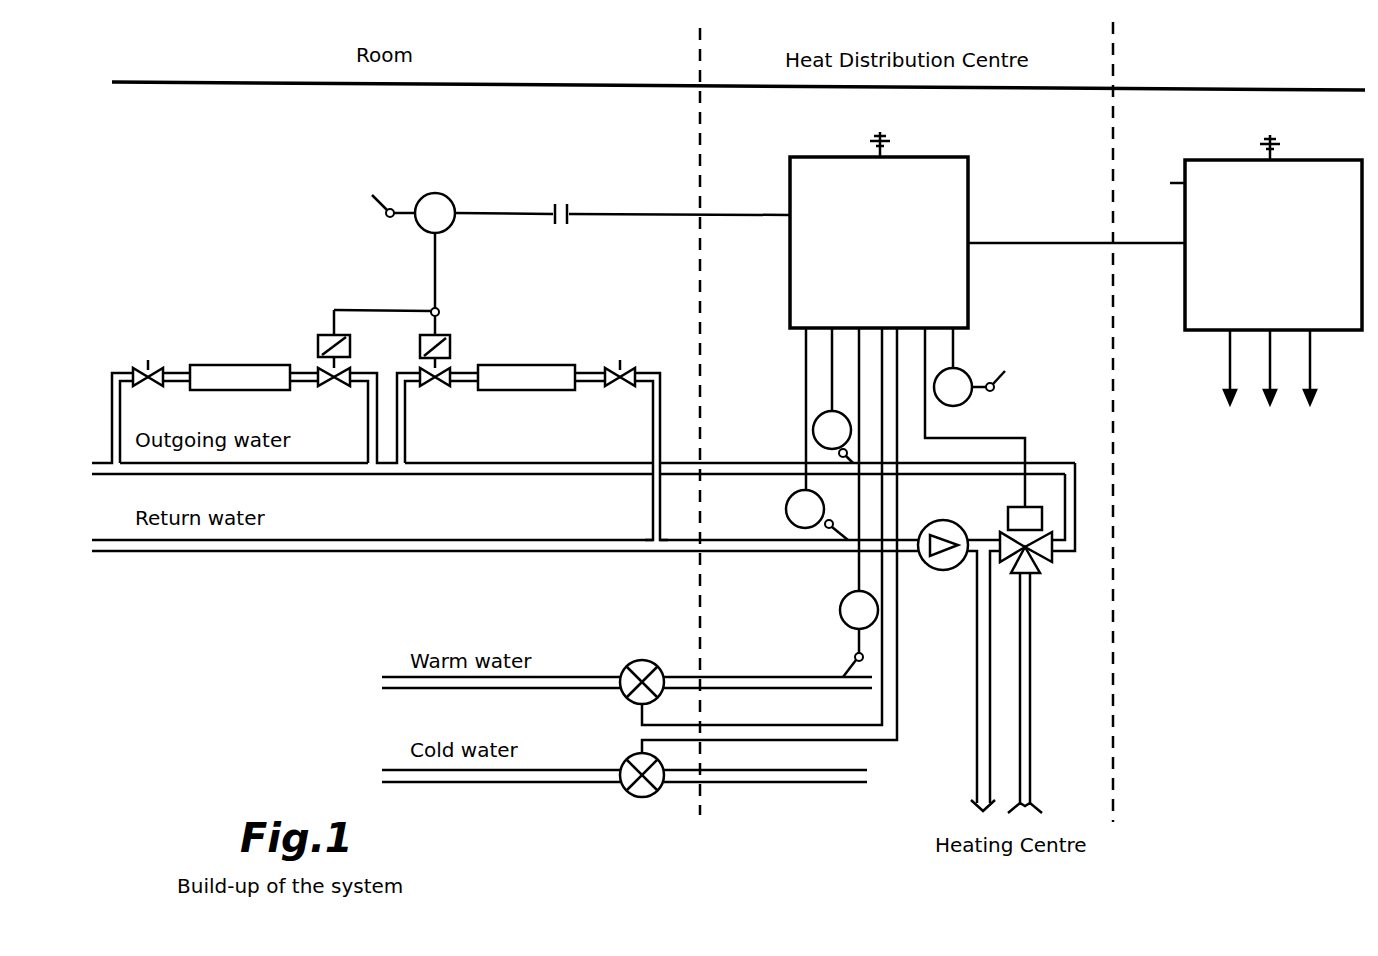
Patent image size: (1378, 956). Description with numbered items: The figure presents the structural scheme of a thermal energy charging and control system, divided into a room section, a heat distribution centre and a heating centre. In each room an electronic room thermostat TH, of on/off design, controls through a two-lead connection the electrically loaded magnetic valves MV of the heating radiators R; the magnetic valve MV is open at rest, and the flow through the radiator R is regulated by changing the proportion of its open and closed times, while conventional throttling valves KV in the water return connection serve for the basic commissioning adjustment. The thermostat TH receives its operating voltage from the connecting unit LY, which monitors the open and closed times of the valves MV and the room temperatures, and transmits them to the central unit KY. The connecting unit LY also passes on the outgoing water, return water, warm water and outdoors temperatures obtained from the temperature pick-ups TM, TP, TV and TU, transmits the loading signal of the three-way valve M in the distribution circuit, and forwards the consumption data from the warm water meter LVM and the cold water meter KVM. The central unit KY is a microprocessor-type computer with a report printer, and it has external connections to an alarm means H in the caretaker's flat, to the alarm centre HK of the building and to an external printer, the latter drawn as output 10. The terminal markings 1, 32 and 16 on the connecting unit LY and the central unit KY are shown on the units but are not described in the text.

The terminal 1 of connecting unit / central unit 1 is at (790, 183).
The terminal 32 of connecting unit 32 is at (790, 283).
The terminal 16 of central unit 16 is at (1185, 297).
The output 10 of central unit 10 is at (1231, 386).
The alarm means H is at (1269, 386).
The alarm centre HK is at (1311, 386).
The electronic room thermostat TH is at (413, 264).
The throttling valve KV is at (384, 386).
The magnetic valve MV is at (386, 361).
The heating radiator R is at (382, 378).
The connecting unit LY is at (879, 217).
The central unit KY is at (1254, 218).
The outgoing water temperature pick-up TM is at (833, 395).
The return water temperature pick-up TP is at (817, 434).
The warm water temperature pick-up TV is at (859, 502).
The outdoors temperature pick-up TU is at (969, 367).
The three-way valve M is at (988, 450).
The warm water meter LVM is at (644, 672).
The cold water meter KVM is at (642, 790).